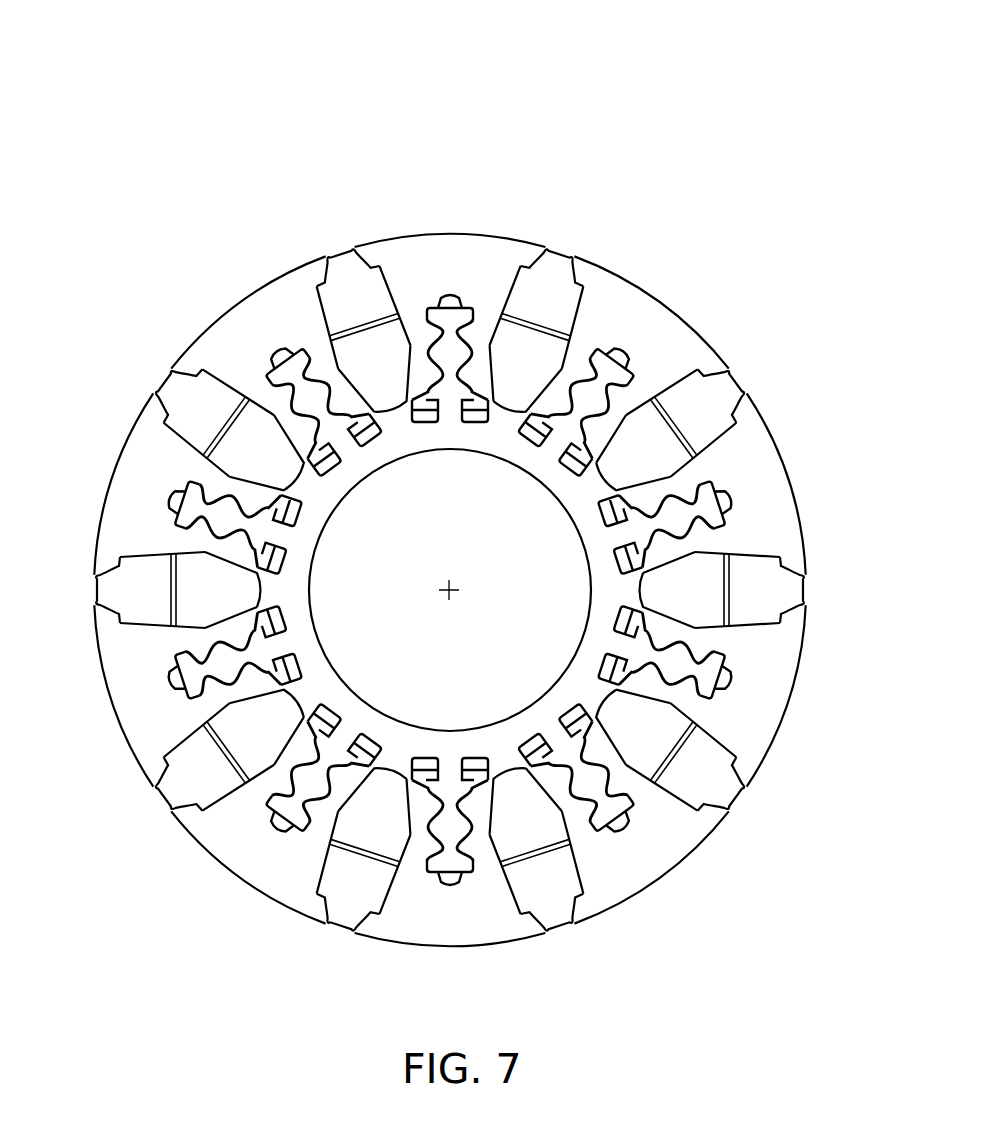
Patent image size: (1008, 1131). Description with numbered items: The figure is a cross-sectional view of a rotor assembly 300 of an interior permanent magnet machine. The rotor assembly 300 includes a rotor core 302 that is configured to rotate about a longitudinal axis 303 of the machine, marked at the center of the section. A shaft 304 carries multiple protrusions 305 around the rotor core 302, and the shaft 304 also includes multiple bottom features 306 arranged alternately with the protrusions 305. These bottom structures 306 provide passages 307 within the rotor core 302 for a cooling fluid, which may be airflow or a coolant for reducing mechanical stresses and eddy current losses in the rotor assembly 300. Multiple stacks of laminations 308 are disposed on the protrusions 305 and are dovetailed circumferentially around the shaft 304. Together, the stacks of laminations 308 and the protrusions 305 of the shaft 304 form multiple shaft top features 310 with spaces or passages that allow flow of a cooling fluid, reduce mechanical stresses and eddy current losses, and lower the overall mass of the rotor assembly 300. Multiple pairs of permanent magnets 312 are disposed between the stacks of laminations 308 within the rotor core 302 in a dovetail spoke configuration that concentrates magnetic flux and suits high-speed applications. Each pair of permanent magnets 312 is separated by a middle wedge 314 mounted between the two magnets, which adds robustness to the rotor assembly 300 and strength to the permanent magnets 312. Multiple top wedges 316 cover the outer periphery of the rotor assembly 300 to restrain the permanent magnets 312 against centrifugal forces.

The rotor assembly 300 is at (778, 80).
The rotor core 302 is at (800, 469).
The longitudinal axis 303 is at (447, 589).
The shaft 304 is at (385, 718).
The protrusions 305 is at (293, 372).
The bottom features 306 is at (597, 693).
The passages 307 is at (607, 512).
The stacks of laminations 308 is at (413, 285).
The shaft top features 310 is at (167, 678).
The permanent magnets 312 is at (678, 402).
The middle wedges 314 is at (173, 572).
The top wedges 316 is at (733, 382).